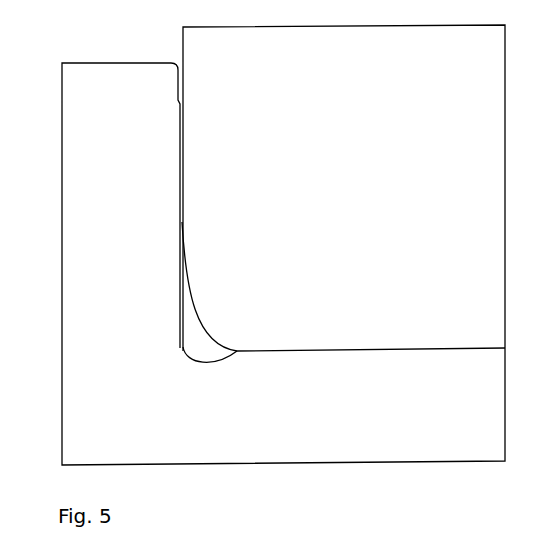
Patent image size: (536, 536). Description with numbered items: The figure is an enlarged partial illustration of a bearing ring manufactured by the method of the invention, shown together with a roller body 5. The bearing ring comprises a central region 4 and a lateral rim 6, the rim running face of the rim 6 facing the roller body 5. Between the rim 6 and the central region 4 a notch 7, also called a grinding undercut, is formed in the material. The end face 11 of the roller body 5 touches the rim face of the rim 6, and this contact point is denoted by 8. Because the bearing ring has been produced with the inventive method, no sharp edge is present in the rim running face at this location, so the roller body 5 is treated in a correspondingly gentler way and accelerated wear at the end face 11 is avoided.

The central region 4 is at (260, 429).
The roller body 5 is at (331, 163).
The lateral rim 6 is at (138, 221).
The notch 7 is at (202, 347).
The contact point 8 is at (182, 220).
The end face of the roller body 11 is at (180, 181).